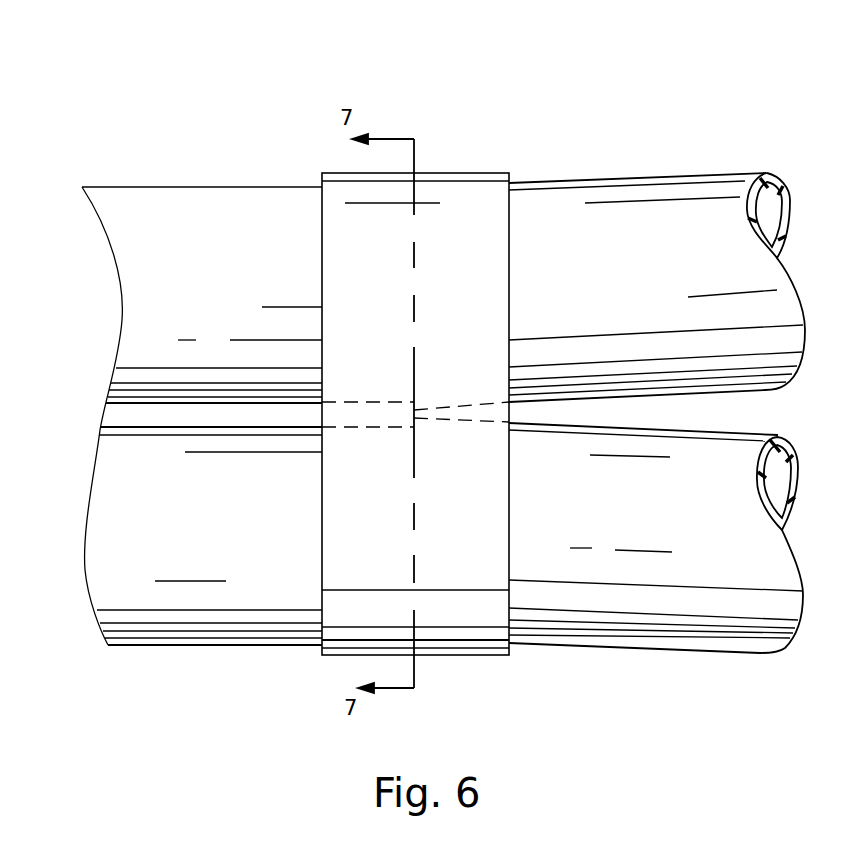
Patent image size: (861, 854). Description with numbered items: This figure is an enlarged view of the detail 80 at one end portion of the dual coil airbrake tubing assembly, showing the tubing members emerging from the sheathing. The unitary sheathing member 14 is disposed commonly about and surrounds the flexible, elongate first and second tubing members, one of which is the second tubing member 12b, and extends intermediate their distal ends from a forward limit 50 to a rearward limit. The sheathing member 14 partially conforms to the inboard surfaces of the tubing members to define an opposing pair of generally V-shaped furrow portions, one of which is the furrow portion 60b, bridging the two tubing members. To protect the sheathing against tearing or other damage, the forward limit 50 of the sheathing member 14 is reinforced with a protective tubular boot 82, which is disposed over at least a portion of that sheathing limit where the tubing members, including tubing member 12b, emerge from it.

The detail 80 is at (731, 71).
The tubular boot 82 is at (482, 171).
The second tubing member 12b is at (723, 173).
The sheathing member 14 is at (112, 250).
The furrow portion 60b is at (128, 425).
The forward limit 50 is at (417, 668).